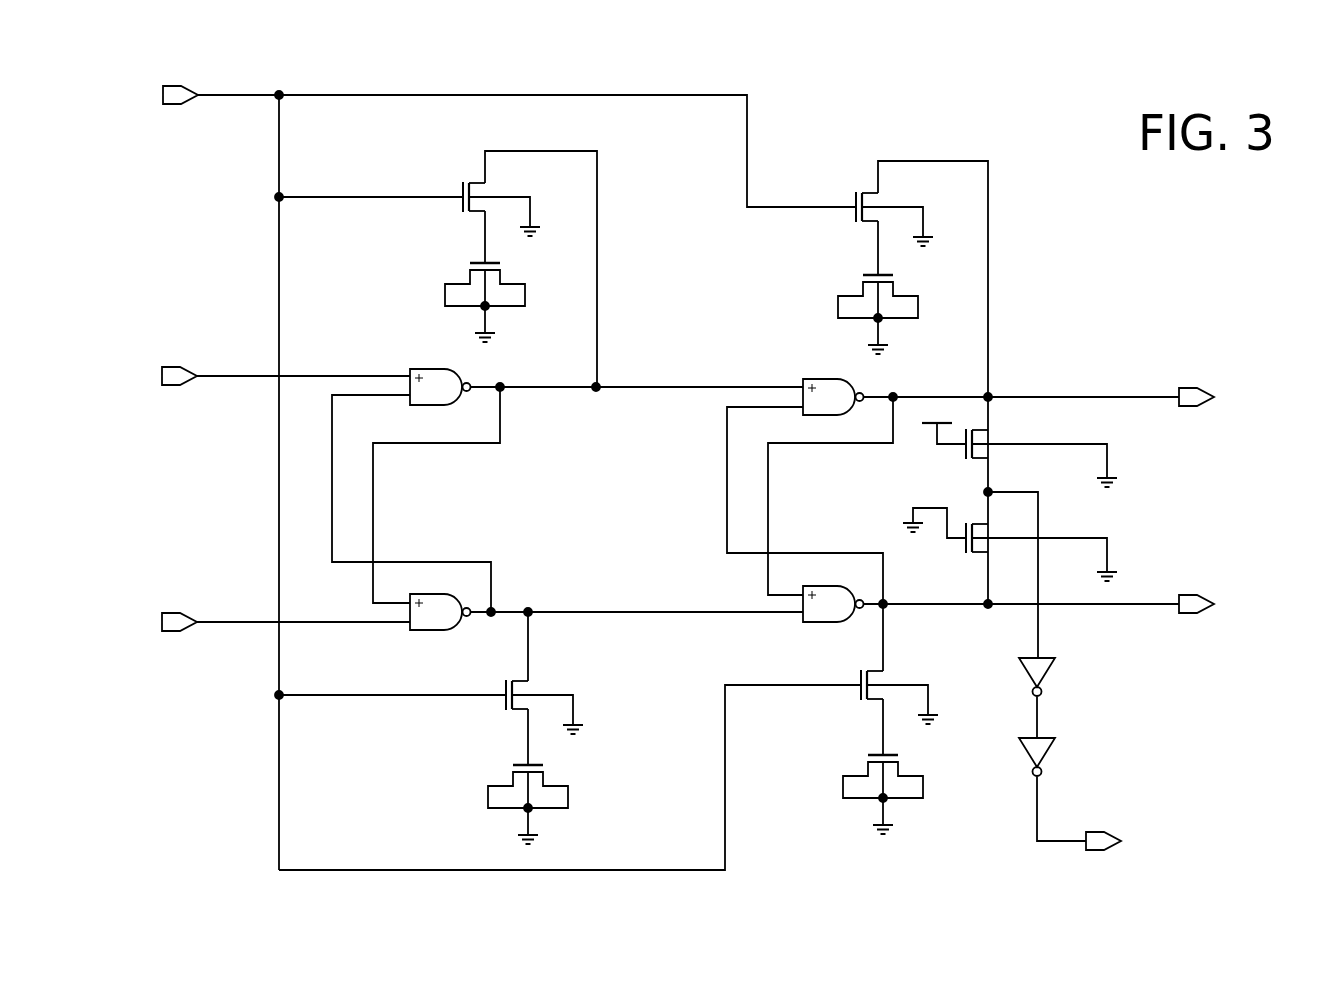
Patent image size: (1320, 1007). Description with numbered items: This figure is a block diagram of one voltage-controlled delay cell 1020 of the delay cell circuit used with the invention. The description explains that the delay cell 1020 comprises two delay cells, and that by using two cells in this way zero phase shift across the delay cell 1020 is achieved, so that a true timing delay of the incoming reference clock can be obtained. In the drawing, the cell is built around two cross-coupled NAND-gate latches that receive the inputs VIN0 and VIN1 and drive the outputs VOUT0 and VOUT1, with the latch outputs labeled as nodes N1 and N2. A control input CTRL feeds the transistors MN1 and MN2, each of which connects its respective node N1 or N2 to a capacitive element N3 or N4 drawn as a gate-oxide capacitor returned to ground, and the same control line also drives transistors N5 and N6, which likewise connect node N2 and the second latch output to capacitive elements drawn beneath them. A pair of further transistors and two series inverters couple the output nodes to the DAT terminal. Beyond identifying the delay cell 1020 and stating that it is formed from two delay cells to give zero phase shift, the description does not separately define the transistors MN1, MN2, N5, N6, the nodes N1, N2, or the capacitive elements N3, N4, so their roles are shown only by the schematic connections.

The voltage delay cell 1020 is at (1220, 216).
The NMOS transistor MN1 is at (530, 255).
The NMOS transistor MN2 is at (922, 369).
The node N1 is at (637, 373).
The node N2 is at (637, 601).
The MOS capacitor N3 is at (485, 283).
The MOS capacitor N4 is at (878, 294).
The NMOS transistor N5 is at (534, 728).
The NMOS transistor N6 is at (889, 719).